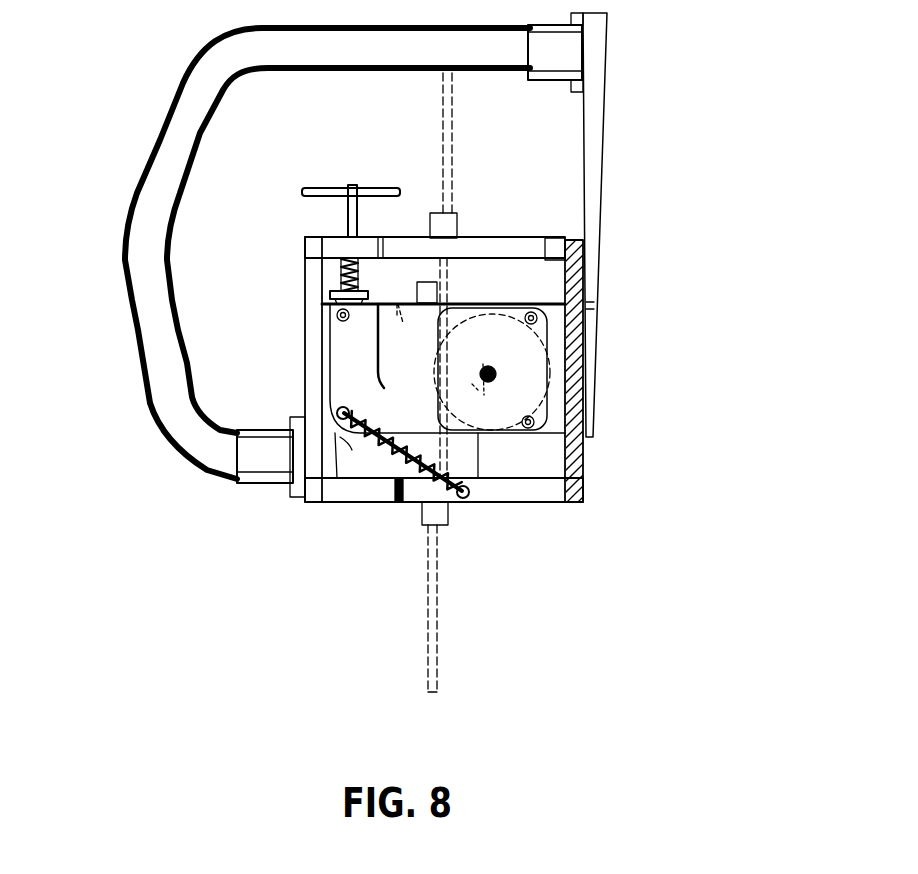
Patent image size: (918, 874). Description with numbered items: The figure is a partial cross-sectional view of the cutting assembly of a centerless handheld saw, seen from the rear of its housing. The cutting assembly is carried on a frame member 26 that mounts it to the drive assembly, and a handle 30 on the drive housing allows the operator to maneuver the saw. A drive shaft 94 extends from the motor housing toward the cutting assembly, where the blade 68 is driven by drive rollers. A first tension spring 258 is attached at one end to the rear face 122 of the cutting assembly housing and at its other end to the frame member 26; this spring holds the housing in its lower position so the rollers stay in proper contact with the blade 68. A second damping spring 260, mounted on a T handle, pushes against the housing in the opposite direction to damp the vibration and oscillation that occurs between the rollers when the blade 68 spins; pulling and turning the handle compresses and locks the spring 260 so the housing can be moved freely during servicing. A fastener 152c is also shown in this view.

The frame member 26 is at (533, 497).
The handle 30 is at (157, 378).
The blade 68 is at (428, 620).
The drive shaft 94 is at (496, 375).
The rear face 122 is at (410, 322).
The screw 152c is at (337, 312).
The first tension spring 258 is at (362, 437).
The second damping spring 260 is at (343, 275).